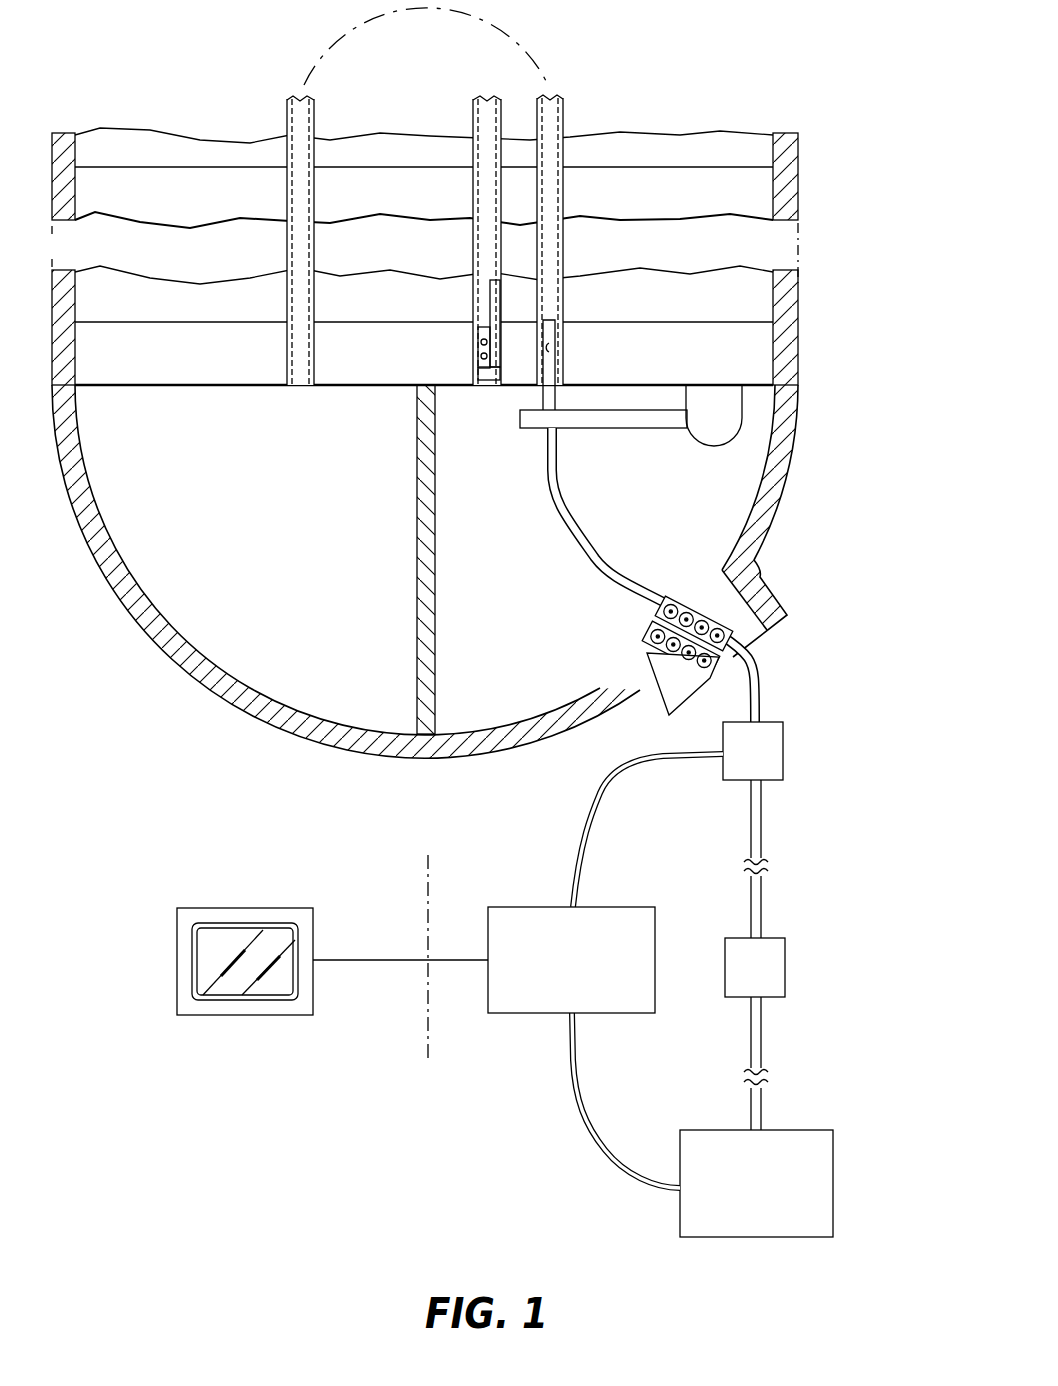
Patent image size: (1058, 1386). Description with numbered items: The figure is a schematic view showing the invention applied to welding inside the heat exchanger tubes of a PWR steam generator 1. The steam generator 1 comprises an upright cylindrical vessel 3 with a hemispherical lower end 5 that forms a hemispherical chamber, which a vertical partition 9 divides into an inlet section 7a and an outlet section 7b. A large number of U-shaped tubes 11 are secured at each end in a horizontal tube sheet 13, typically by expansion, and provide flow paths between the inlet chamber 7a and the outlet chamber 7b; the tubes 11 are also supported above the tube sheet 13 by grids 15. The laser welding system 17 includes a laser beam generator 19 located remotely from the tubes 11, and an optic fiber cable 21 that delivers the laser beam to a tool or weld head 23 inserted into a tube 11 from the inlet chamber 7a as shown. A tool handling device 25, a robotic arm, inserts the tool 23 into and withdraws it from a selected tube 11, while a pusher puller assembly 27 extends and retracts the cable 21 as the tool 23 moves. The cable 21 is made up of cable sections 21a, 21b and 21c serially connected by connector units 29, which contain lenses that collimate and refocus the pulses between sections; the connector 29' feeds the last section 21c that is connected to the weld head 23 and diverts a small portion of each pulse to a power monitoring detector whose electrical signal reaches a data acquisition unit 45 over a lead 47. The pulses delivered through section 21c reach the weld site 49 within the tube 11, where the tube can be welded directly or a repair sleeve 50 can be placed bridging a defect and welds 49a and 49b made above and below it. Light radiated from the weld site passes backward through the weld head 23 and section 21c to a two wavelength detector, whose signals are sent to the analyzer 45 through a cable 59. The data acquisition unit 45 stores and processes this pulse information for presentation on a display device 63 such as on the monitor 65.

The PWR steam generator 1 is at (883, 402).
The upright cylindrical vessel 3 is at (800, 183).
The hemispherical lower end 5 is at (773, 513).
The inlet section 7a is at (503, 693).
The outlet section 7b is at (283, 655).
The vertical partition 9 is at (436, 581).
The U-shaped tubes 11 is at (562, 285).
The horizontal tube sheet 13 is at (742, 312).
The grids 15 is at (633, 160).
The laser welding system 17 is at (838, 792).
The laser beam generator 19 is at (835, 1180).
The optic fiber cable 21 is at (790, 900).
The cable section 21a is at (762, 1038).
The cable section 21b is at (762, 832).
The cable section 21c is at (747, 663).
The weld head 23 is at (522, 400).
The tool handling device 25 is at (712, 445).
The pusher puller assembly 27 is at (753, 597).
The connector units 29 is at (786, 967).
The connector 29' is at (788, 751).
The data acquisition unit 45 is at (597, 907).
The lead 47 is at (597, 808).
The weld site 49 is at (560, 357).
The weld 49a is at (478, 342).
The weld 49b is at (481, 362).
The repair sleeve 50 is at (500, 342).
The cable 59 is at (582, 1080).
The display device 63 is at (225, 937).
The monitor 65 is at (288, 910).